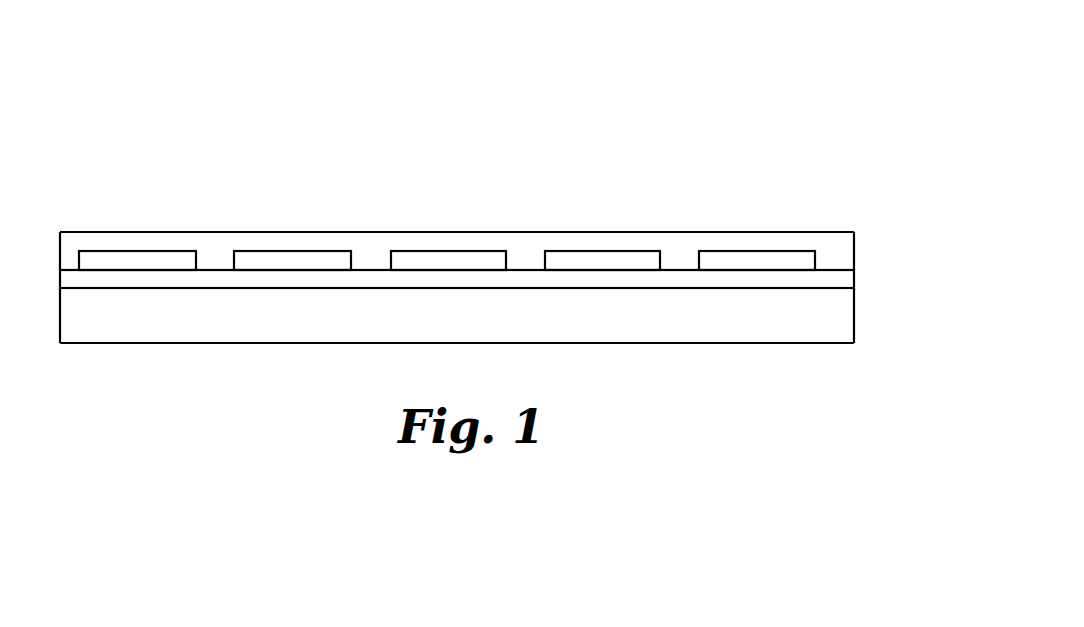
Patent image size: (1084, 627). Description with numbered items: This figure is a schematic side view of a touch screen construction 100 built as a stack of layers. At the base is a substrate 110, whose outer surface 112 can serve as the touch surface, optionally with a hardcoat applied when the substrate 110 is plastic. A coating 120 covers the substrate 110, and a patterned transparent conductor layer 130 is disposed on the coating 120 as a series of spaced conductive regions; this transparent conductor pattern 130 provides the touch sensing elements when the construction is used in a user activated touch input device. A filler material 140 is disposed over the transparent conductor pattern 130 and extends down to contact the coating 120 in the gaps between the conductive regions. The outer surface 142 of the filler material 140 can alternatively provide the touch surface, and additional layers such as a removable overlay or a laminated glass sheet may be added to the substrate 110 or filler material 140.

The touch screen construction 100 is at (766, 160).
The substrate 110 is at (762, 331).
The surface of the substrate 112 is at (572, 343).
The coating 120 is at (840, 280).
The patterned transparent conductor layer 130 is at (710, 257).
The filler material 140 is at (845, 253).
The surface of the filler material 142 is at (477, 232).